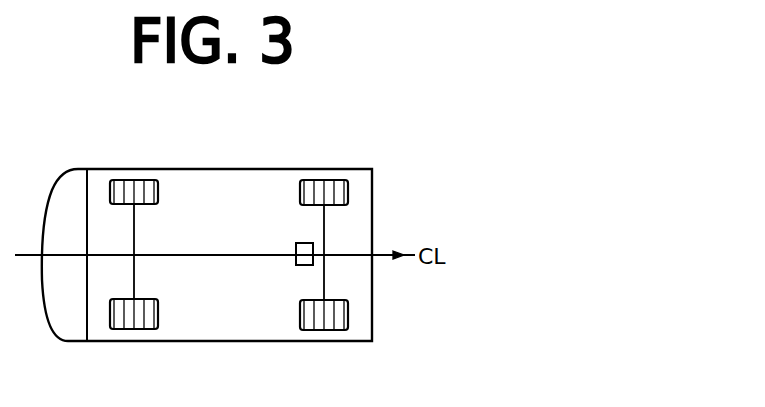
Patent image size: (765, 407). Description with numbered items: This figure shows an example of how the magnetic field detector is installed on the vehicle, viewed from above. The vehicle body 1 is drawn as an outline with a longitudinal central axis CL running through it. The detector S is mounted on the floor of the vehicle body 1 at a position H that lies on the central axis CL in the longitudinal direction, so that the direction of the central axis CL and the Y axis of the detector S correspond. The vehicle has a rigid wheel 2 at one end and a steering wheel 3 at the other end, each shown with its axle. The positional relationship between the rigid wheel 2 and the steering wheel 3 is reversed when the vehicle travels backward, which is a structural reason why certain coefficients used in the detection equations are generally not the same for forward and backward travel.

The vehicle body 1 is at (372, 170).
The rigid wheel 2 is at (322, 330).
The steering wheel 3 is at (138, 329).
The position H is at (302, 253).
The detector S is at (305, 266).